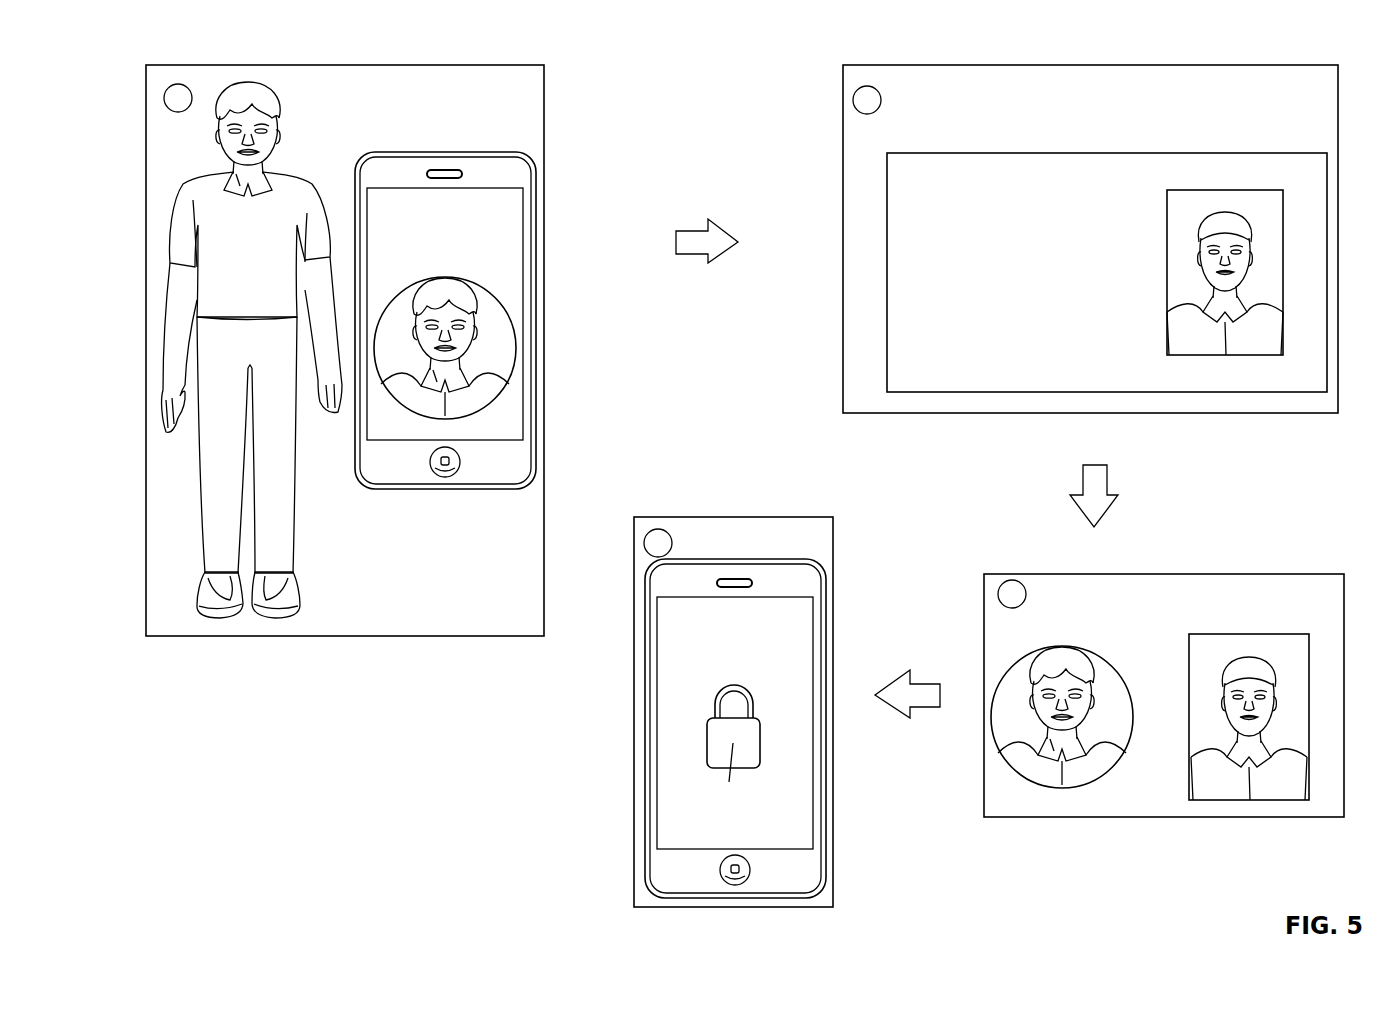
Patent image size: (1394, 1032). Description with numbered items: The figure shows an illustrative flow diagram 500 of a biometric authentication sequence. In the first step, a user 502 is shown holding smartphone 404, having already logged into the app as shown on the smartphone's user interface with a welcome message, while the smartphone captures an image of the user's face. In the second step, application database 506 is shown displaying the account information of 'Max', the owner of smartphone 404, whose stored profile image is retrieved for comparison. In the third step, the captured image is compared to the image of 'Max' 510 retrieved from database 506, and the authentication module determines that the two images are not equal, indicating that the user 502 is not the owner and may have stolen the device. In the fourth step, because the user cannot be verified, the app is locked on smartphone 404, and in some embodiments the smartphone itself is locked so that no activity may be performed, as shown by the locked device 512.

The flow diagram 500 is at (190, 48).
The user 502 is at (292, 170).
The smartphone 404 is at (458, 150).
The application database 506 is at (950, 152).
The image of 'Max' 510 is at (1256, 633).
The locked mobile device 512 is at (645, 706).